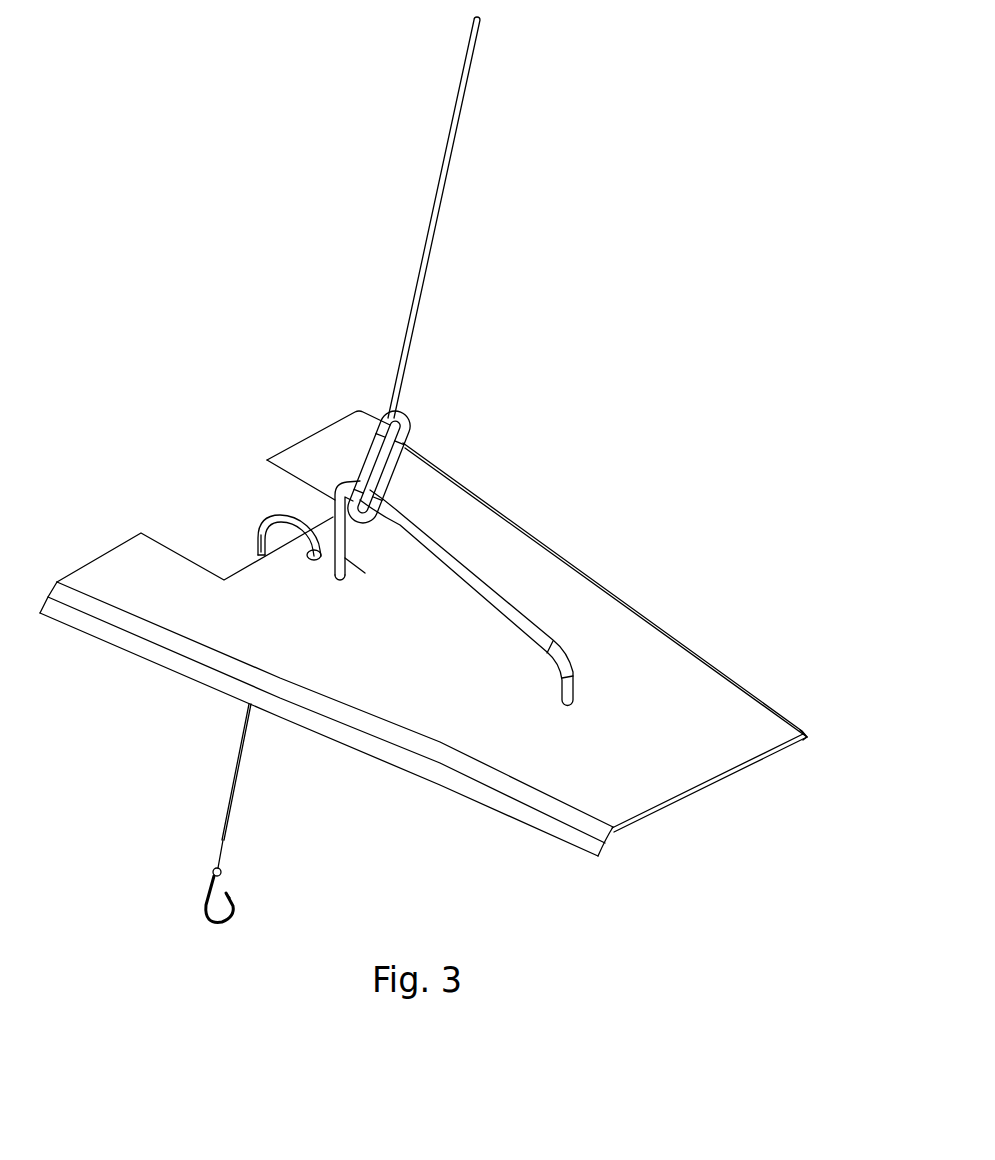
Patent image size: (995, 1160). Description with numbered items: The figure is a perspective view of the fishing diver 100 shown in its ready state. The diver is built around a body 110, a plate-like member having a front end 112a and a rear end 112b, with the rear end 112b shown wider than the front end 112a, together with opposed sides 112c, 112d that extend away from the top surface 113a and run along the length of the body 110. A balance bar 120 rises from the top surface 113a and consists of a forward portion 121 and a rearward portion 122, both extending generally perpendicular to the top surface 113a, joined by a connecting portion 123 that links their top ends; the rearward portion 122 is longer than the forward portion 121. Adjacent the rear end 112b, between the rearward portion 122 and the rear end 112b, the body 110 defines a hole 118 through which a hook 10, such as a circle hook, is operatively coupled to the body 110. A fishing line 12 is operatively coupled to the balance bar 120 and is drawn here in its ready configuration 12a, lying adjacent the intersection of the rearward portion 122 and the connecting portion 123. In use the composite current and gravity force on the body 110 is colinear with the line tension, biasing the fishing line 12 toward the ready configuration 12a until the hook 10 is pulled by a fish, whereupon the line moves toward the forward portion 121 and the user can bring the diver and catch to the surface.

The hook 10 is at (205, 917).
The fishing line 12 is at (438, 192).
The ready configuration 12a is at (384, 413).
The fishing diver 100 is at (621, 347).
The body 110 is at (670, 632).
The front end 112a is at (647, 810).
The rear end 112b is at (73, 574).
The side 112c is at (807, 733).
The side 112d is at (547, 833).
The top surface 113a is at (662, 760).
The hole 118 is at (268, 580).
The balance bar 120 is at (449, 551).
The forward portion 121 is at (563, 693).
The rearward portion 122 is at (365, 573).
The connecting portion 123 is at (513, 607).